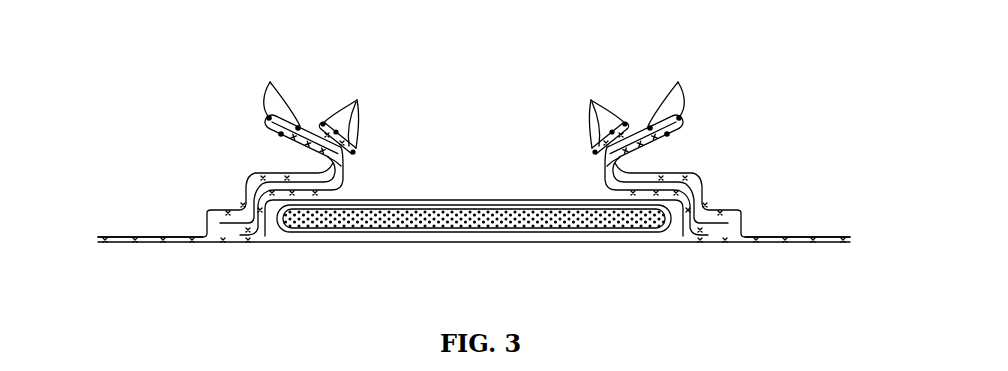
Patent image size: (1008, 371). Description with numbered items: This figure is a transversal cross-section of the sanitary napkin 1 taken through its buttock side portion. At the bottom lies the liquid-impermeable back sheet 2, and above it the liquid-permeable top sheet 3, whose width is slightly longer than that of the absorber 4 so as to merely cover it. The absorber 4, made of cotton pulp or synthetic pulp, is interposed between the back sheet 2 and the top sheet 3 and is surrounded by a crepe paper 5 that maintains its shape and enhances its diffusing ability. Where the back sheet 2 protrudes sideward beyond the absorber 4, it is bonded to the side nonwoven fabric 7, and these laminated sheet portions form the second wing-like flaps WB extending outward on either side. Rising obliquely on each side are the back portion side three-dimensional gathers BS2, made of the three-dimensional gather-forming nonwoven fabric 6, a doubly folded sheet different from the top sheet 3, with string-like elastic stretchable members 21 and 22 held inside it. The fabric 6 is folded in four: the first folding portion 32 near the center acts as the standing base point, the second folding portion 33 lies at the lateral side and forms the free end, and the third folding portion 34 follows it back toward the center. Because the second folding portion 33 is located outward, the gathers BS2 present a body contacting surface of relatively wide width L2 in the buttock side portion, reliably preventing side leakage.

The sanitary napkin 1 is at (490, 86).
The liquid-impermeable back sheet 2 is at (572, 243).
The liquid-permeable top sheet 3 is at (484, 198).
The absorber 4 is at (383, 220).
The crepe paper 5 is at (503, 205).
The three-dimensional gather-forming nonwoven fabric 6 is at (258, 106).
The side nonwoven fabric 7 is at (212, 209).
The string-like elastic stretchable member 21 is at (473, 92).
The string-like elastic stretchable member 22 is at (473, 119).
The first folding portion 32 is at (343, 171).
The second folding portion 33 is at (265, 116).
The third folding portion 34 is at (348, 160).
The back portion side three-dimensional gathers BS2 is at (322, 95).
The width of body contacting surface L2 is at (667, 95).
The second wing-like flaps WB is at (109, 231).